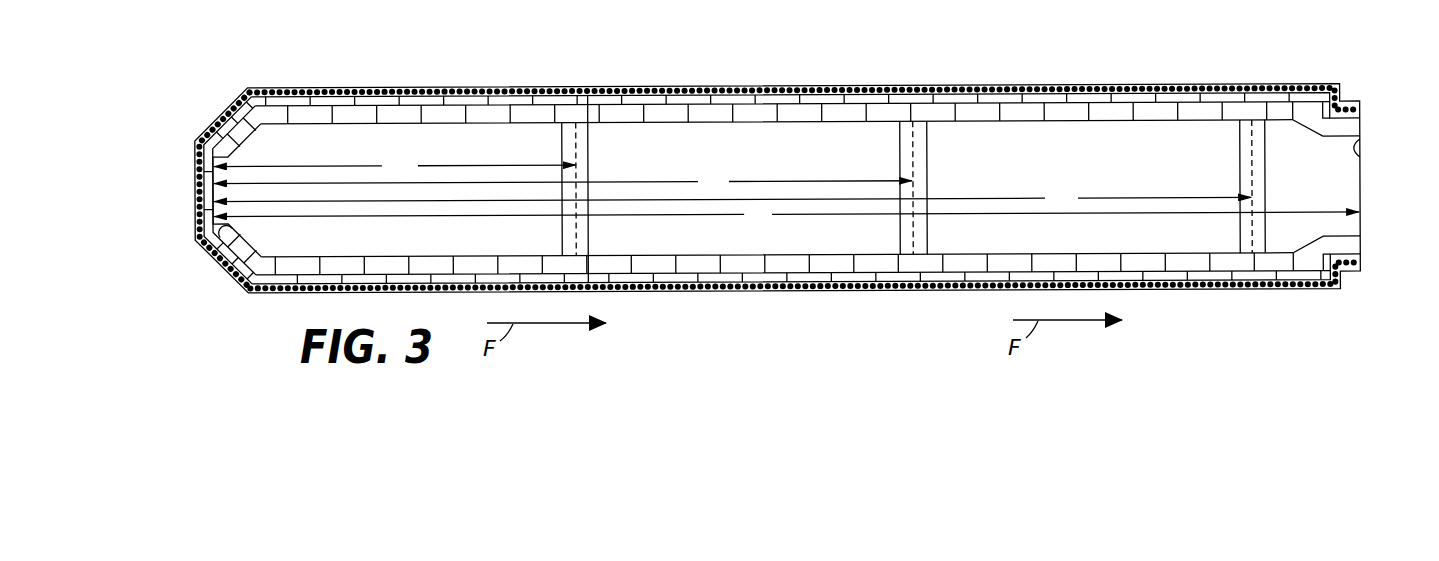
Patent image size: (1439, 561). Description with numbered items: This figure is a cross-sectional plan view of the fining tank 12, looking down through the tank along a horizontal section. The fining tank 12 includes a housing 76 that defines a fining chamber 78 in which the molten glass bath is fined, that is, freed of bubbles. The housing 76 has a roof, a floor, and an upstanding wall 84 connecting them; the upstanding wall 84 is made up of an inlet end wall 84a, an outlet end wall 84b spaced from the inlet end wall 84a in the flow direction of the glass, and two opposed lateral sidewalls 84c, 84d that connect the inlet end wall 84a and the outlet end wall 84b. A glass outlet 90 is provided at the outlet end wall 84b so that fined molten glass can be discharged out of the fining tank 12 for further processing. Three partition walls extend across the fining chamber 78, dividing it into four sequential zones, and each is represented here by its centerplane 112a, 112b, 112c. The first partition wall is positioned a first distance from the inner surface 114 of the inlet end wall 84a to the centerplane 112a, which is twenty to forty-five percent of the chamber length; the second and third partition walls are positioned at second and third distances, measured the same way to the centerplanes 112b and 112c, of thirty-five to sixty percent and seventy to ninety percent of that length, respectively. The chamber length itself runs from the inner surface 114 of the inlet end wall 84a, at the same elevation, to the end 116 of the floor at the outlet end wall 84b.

The fining tank 12 is at (930, 60).
The housing 76 is at (231, 106).
The fining chamber 78 is at (311, 135).
The upstanding wall 84 is at (194, 167).
The inlet end wall 84a is at (198, 184).
The outlet end wall 84b is at (1352, 128).
The lateral sidewall 84c is at (784, 283).
The lateral sidewall 84d is at (768, 99).
The glass outlet 90 is at (1365, 232).
The centerplane of the first partition wall 112a is at (578, 141).
The centerplane of the second partition wall 112b is at (914, 141).
The centerplane of the third partition wall 112c is at (1254, 146).
The inner surface of the inlet end wall 114 is at (217, 258).
The end of the floor 116 is at (1362, 150).